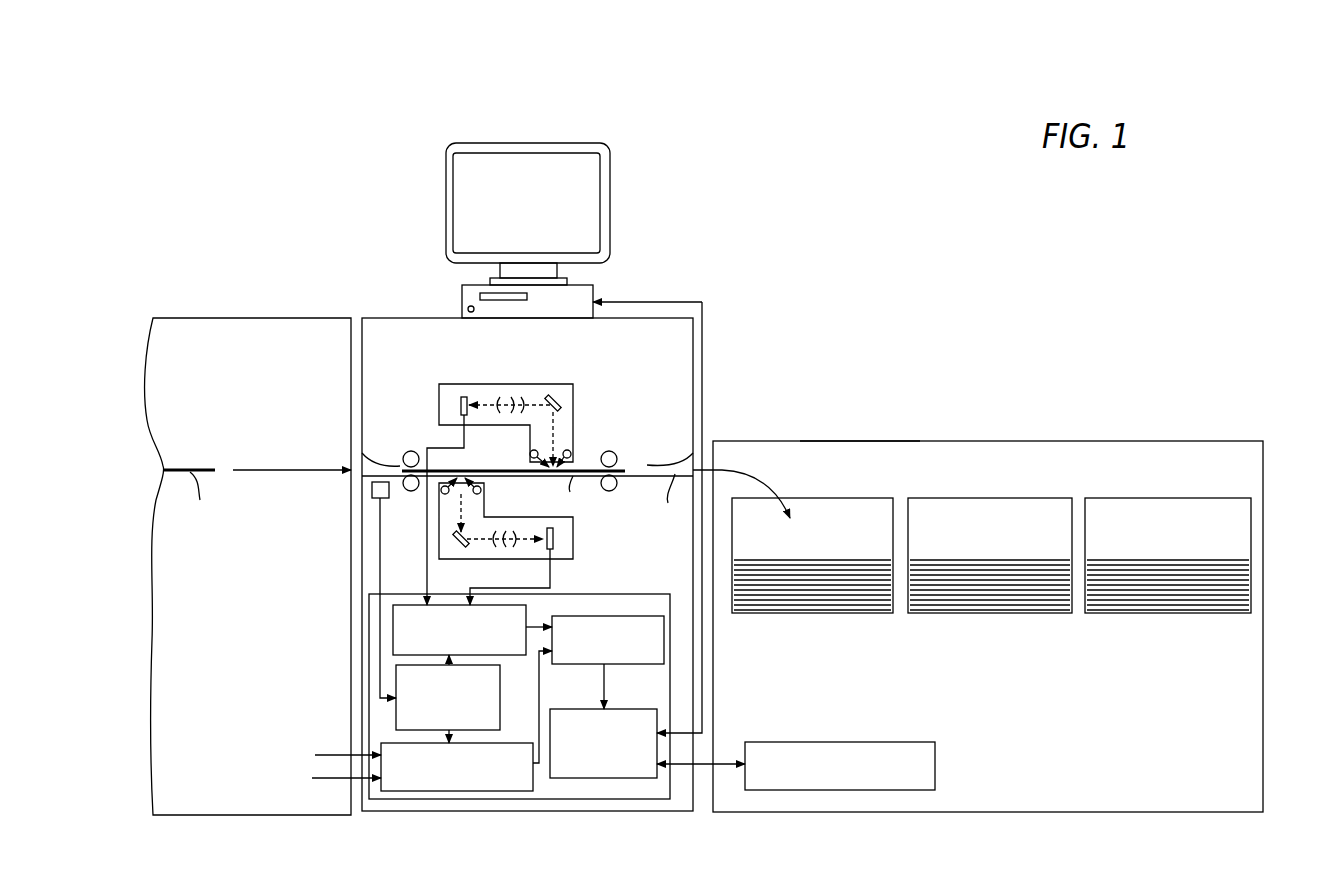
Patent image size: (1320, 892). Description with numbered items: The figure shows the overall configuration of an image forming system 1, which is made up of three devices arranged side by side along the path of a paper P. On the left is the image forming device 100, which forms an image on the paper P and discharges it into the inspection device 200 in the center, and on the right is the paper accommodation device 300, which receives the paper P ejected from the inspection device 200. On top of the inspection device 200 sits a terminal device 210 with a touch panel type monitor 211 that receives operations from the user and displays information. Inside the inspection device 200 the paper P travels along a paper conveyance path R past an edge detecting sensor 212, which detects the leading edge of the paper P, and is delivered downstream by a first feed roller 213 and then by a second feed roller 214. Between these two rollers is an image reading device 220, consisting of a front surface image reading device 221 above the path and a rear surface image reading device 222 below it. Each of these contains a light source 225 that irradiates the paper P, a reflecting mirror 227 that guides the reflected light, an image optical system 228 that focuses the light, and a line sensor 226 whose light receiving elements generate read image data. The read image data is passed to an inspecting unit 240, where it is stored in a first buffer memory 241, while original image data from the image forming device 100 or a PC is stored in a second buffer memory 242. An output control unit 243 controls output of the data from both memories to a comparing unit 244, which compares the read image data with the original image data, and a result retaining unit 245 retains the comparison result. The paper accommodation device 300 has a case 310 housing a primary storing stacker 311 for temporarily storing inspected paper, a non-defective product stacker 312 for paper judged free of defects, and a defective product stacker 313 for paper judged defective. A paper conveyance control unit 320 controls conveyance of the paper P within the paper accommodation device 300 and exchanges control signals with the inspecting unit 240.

The image forming system 1 is at (220, 141).
The image forming device 100 is at (251, 309).
The inspection device 200 is at (683, 177).
The terminal device 210 is at (481, 197).
The touch panel type monitor 211 is at (446, 190).
The edge detecting sensor 212 is at (370, 490).
The first feed roller 213 is at (406, 451).
The second feed roller 214 is at (616, 451).
The image reading device 220 is at (463, 357).
The front surface image reading device 221 is at (583, 377).
The rear surface image reading device 222 is at (579, 534).
The light source 225 is at (570, 451).
The line sensor 226 is at (457, 392).
The reflecting mirror 227 is at (550, 395).
The image optical system 228 is at (505, 386).
The inspecting unit 240 is at (369, 653).
The first buffer memory 241 is at (393, 632).
The second buffer memory 242 is at (381, 748).
The output control unit 243 is at (396, 700).
The comparing unit 244 is at (629, 665).
The result retaining unit 245 is at (592, 709).
The paper accommodation device 300 is at (1215, 383).
The case 310 is at (858, 441).
The primary storing stacker 311 is at (813, 613).
The non-defective product stacker 312 is at (1177, 613).
The defective product stacker 313 is at (988, 613).
The paper conveyance control unit 320 is at (935, 765).